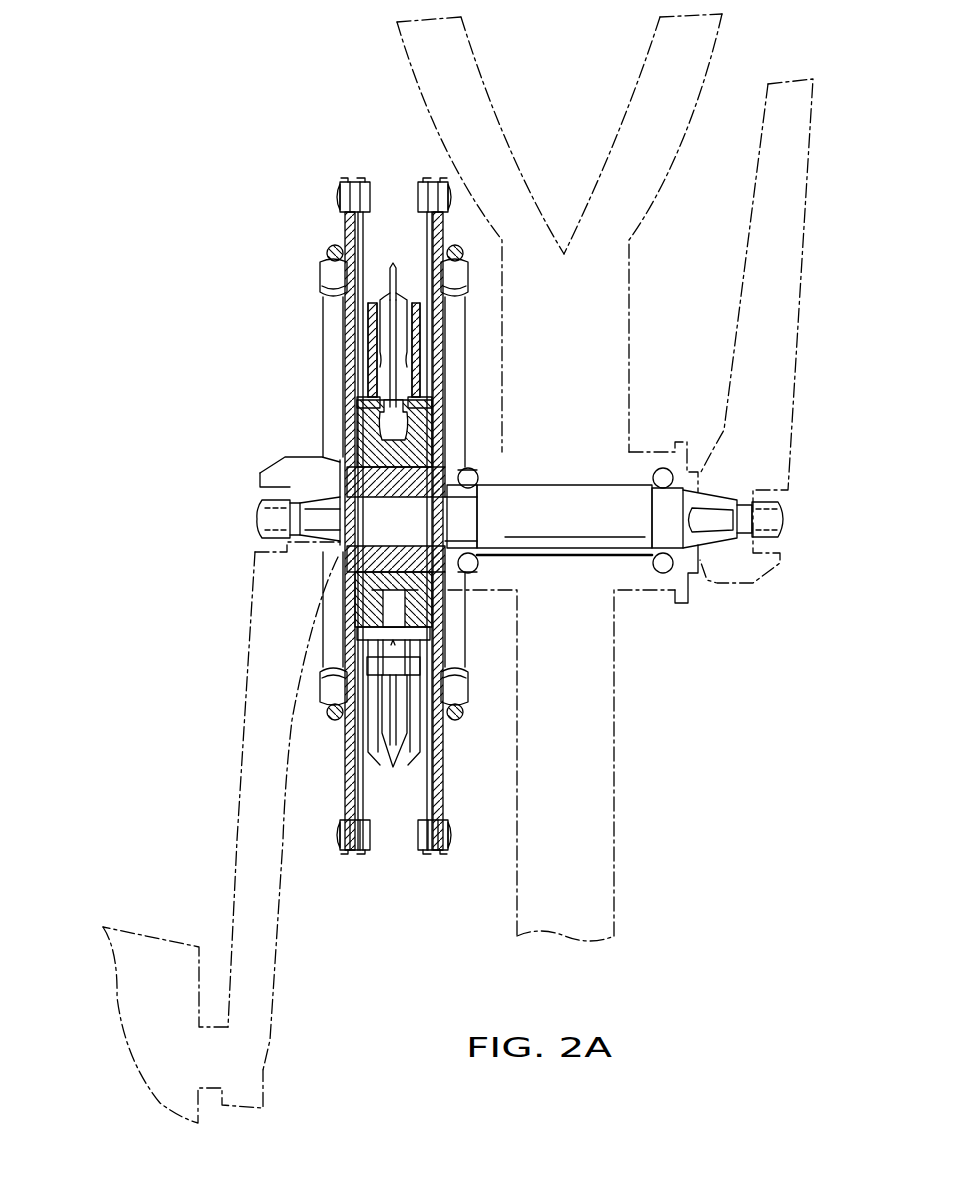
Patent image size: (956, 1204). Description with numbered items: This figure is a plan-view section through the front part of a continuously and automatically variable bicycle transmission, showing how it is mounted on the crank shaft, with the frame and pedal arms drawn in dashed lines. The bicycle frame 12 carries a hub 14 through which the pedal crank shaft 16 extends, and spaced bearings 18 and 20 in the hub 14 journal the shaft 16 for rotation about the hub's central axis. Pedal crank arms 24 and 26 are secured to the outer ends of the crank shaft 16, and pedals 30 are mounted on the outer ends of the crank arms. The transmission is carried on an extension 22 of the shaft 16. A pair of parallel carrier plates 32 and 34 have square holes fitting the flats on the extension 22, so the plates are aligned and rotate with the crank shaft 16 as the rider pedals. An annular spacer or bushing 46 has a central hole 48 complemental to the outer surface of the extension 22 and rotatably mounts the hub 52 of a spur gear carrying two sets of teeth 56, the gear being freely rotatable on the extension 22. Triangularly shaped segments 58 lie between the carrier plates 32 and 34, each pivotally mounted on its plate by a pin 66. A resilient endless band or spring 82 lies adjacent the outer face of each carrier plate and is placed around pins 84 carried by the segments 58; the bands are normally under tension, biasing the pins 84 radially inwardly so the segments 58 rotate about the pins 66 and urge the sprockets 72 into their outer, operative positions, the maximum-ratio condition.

The frame 12 is at (636, 306).
The hub 14 is at (660, 450).
The pedal crank shaft 16 is at (568, 511).
The bearing 18 is at (506, 481).
The bearing 20 is at (652, 472).
The extension 22 is at (357, 515).
The pedal crank arm 24 is at (245, 693).
The pedal crank arm 26 is at (797, 268).
The pedal 30 is at (183, 940).
The carrier plate 32 is at (347, 226).
The carrier plate 34 is at (444, 336).
The annular spacer or bushing 46 is at (467, 459).
The central hole 48 is at (350, 558).
The hub of spur gear 52 is at (430, 456).
The teeth 56 is at (362, 402).
The segment 58 is at (424, 220).
The pin 66 is at (423, 190).
The sprocket 72 is at (394, 292).
The band or spring 82 is at (330, 248).
The pin 84 is at (322, 278).